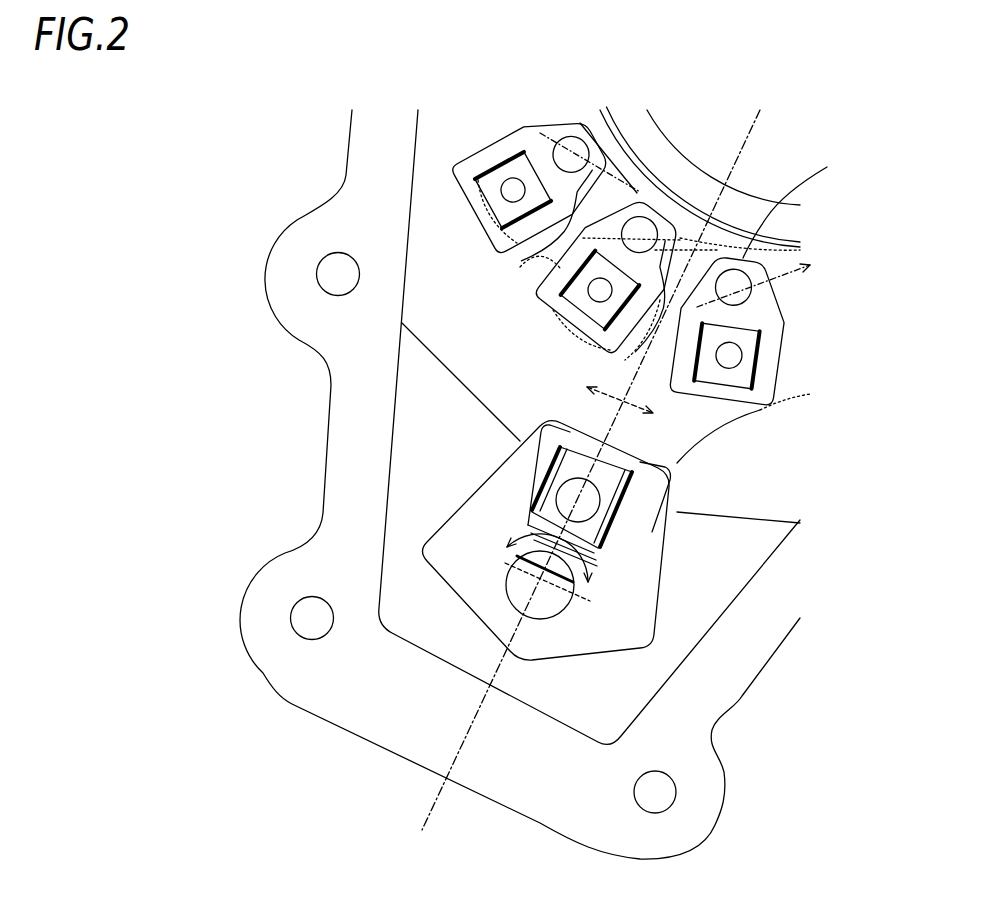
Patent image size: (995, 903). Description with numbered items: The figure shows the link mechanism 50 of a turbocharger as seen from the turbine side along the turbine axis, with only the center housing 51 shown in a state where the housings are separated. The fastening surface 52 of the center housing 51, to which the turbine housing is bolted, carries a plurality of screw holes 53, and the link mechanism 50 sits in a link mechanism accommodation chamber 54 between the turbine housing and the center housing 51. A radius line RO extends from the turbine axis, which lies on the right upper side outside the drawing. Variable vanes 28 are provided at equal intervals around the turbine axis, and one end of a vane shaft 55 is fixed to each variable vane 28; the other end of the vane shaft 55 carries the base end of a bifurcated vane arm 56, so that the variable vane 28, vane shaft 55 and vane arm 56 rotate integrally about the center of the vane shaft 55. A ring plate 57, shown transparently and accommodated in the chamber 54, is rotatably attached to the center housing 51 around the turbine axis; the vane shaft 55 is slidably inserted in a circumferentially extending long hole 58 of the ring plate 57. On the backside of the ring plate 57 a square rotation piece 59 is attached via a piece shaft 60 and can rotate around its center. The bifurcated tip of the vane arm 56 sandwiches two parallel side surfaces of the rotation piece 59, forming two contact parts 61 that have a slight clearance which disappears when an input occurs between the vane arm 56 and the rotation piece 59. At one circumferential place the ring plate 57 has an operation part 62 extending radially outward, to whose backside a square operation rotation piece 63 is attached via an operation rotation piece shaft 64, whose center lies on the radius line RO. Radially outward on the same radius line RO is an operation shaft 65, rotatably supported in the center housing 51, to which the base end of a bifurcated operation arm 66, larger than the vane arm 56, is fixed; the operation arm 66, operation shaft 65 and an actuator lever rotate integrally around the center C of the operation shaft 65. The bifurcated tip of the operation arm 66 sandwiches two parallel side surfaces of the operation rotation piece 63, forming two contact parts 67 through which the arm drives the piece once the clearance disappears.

The variable vane 28 is at (690, 170).
The link mechanism 50 is at (767, 443).
The center housing 51 is at (770, 660).
The fastening surface 52 is at (727, 677).
The screw hole 53 is at (660, 795).
The link mechanism accommodation chamber 54 is at (517, 400).
The vane shaft 55 is at (719, 202).
The vane arm 56 is at (657, 335).
The ring plate 57 is at (707, 436).
The long hole 58 is at (597, 203).
The rotation piece 59 is at (590, 307).
The piece shaft 60 is at (590, 309).
The contact part 61 is at (527, 267).
The operation part 62 is at (660, 525).
The operation rotation piece 63 is at (610, 480).
The operation rotation piece shaft 64 is at (580, 468).
The operation shaft 65 is at (547, 617).
The operation arm 66 is at (467, 523).
The contact part 67 is at (517, 490).
The center of the operation shaft C is at (505, 601).
The radius line RO is at (578, 492).